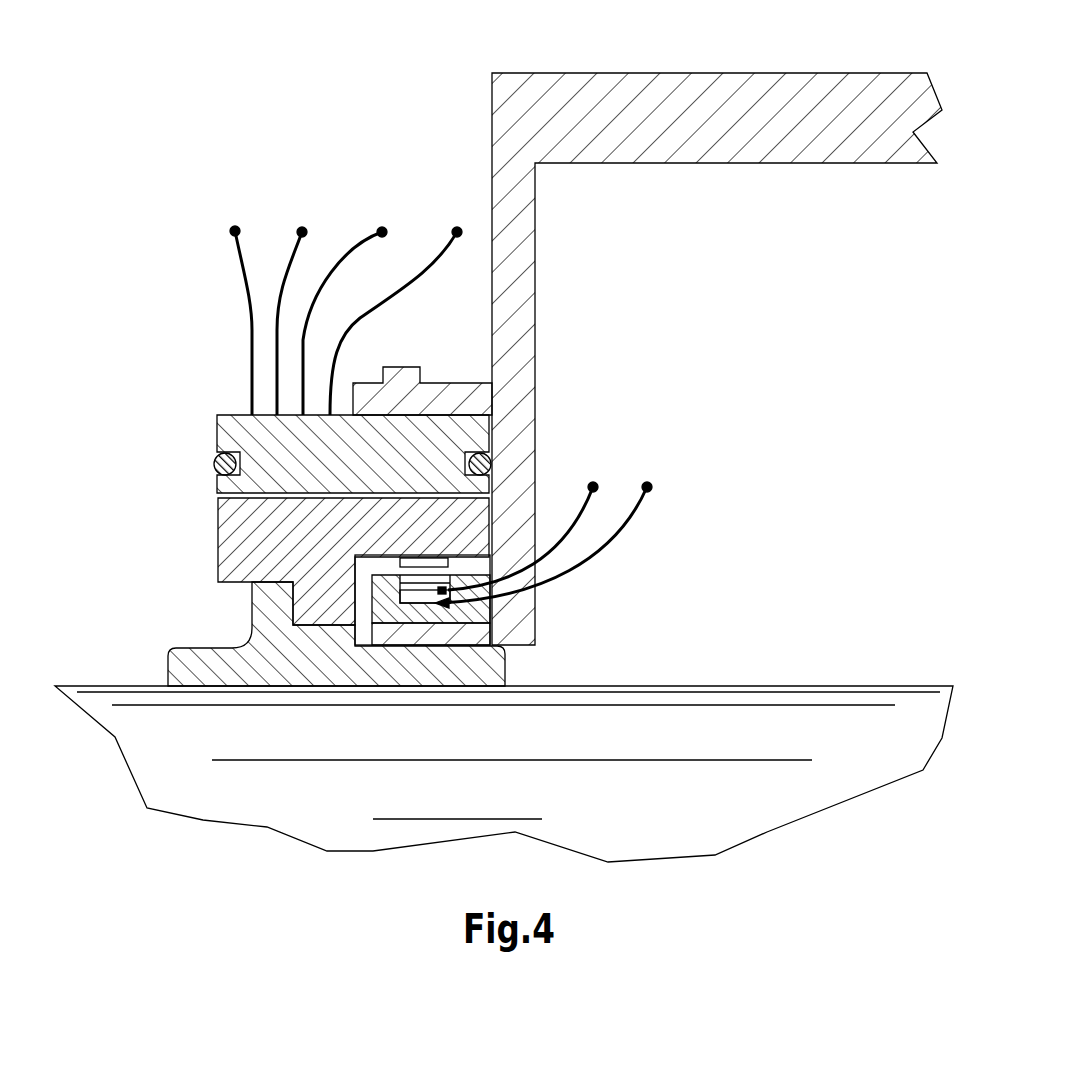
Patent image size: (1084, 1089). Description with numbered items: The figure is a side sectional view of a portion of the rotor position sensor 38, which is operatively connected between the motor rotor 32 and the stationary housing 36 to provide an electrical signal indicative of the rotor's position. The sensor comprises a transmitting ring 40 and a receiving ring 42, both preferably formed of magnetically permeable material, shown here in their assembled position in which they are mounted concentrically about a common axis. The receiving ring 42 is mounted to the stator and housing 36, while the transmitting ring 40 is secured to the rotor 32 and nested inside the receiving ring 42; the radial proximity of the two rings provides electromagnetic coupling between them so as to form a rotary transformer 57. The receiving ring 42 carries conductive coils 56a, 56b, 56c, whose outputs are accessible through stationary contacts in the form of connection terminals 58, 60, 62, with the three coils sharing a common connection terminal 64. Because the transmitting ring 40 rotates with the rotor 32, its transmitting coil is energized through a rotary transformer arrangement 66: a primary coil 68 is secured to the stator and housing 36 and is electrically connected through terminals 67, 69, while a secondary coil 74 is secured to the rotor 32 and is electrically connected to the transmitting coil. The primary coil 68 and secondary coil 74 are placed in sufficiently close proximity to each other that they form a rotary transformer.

The motor rotor 32 is at (720, 727).
The housing 36 is at (624, 148).
The rotor position sensor 38 is at (162, 408).
The transmitting ring 40 is at (225, 522).
The receiving ring 42 is at (240, 412).
The conductive coil 56a is at (291, 266).
The coil 56b is at (325, 295).
The coil 56c is at (400, 292).
The rotary transformer 57 is at (203, 493).
The connection terminal 58 is at (304, 227).
The connection terminal 60 is at (382, 225).
The connection terminal 62 is at (456, 226).
The common connection terminal 64 is at (230, 230).
The rotary transformer arrangement 66 is at (393, 593).
The terminal 67 is at (596, 482).
The primary coil 68 is at (440, 607).
The terminal 69 is at (652, 487).
The secondary coil 74 is at (435, 562).